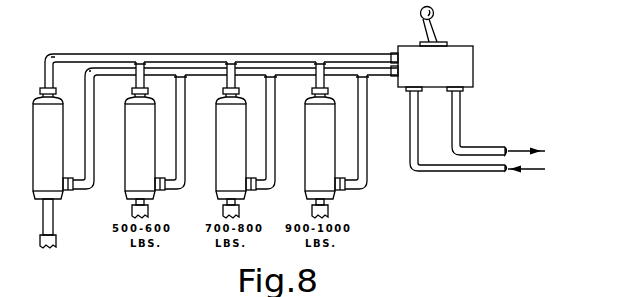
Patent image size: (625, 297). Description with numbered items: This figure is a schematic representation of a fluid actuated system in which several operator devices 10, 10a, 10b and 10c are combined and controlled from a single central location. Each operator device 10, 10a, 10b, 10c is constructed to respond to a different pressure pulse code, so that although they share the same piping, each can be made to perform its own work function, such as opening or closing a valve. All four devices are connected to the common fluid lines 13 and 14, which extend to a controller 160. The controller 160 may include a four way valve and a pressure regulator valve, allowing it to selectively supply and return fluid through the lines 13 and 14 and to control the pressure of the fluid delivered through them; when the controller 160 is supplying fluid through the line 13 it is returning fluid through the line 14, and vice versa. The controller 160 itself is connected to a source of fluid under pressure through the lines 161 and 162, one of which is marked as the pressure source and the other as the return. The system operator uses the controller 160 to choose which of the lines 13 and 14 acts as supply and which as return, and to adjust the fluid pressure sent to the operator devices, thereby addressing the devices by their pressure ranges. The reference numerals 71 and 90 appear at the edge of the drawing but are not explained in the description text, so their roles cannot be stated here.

The operator device 10 is at (31, 143).
The operator device 10a is at (123, 146).
The operator device 10b is at (214, 149).
The operator device 10c is at (303, 147).
The common fluid line 13 is at (92, 51).
The common fluid line 14 is at (95, 176).
The controller 160 is at (467, 72).
The fluid source line 161 is at (424, 124).
The fluid source line 162 is at (461, 112).
The pressure range indicator 71 is at (41, 266).
The pressure indicator 90 is at (0, 293).